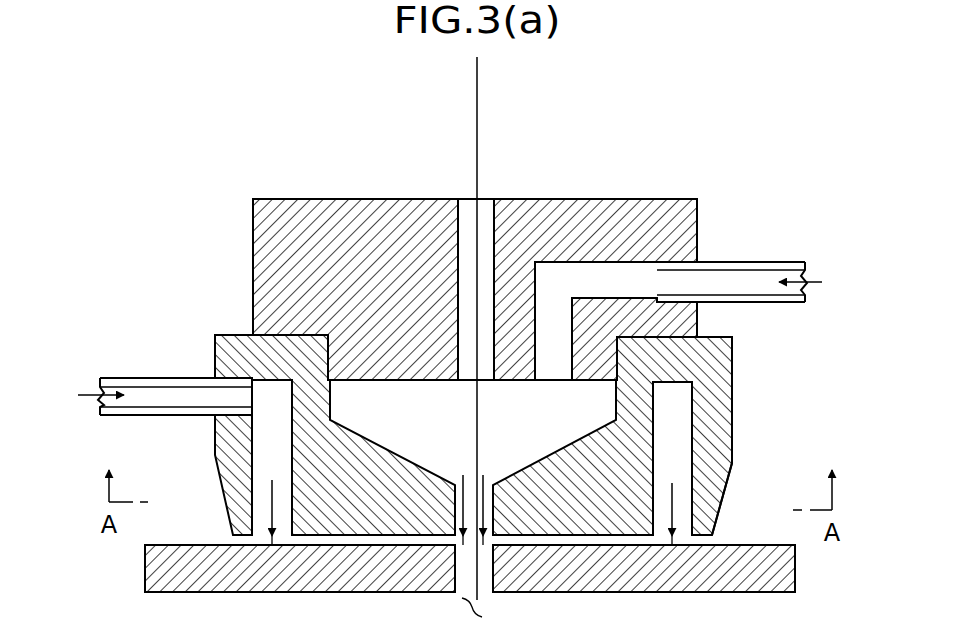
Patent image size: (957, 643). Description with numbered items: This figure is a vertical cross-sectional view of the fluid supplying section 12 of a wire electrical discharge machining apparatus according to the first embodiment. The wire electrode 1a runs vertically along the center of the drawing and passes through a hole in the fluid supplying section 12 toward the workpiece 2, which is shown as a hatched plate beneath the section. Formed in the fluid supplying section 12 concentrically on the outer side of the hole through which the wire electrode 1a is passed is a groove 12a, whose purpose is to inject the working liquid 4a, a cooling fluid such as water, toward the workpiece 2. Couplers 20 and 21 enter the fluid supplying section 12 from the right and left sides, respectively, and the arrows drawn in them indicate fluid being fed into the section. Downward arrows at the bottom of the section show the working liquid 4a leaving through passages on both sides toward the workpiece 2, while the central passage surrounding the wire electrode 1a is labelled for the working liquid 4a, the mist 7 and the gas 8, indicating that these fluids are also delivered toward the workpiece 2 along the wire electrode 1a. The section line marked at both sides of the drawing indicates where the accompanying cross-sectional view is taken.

The wire electrode 1a is at (477, 124).
The workpiece 2 is at (710, 596).
The working liquid 4a is at (258, 504).
The mist 7 is at (485, 483).
The gas 8 is at (485, 483).
The fluid supplying section 12 is at (732, 355).
The groove 12a is at (690, 425).
The coupler 20 is at (757, 262).
The coupler 21 is at (157, 378).